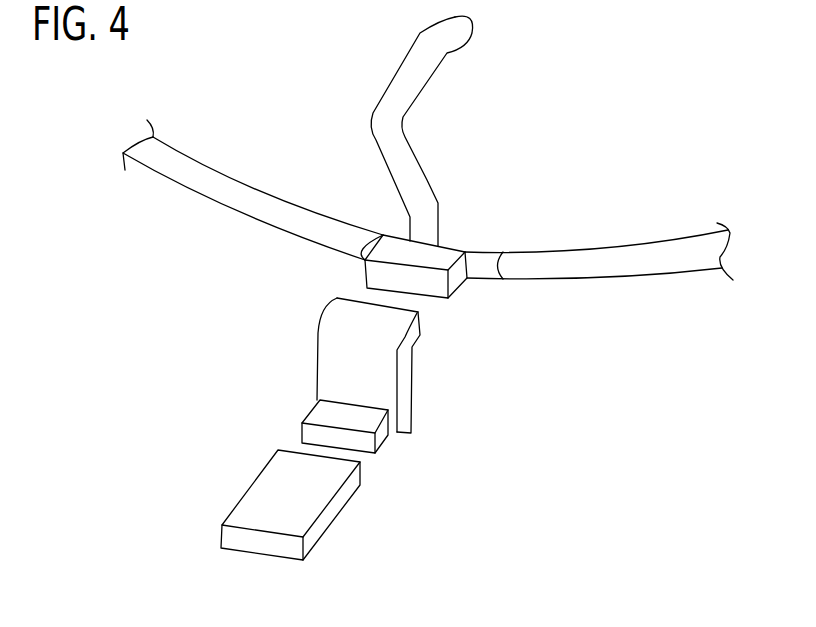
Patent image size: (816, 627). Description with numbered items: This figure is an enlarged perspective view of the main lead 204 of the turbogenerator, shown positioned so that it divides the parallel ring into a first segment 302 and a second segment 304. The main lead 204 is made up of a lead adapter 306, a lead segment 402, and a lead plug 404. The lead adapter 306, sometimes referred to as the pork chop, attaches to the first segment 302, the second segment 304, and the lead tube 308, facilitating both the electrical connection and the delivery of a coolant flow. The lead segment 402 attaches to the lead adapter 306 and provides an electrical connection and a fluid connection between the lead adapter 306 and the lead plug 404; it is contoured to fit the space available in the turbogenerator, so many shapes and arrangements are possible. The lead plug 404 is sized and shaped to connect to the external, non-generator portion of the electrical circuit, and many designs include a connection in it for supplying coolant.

The main lead 204 is at (550, 113).
The first segment 302 is at (240, 208).
The second segment 304 is at (610, 270).
The lead adapter 306 is at (440, 258).
The lead tube 308 is at (405, 80).
The lead segment 402 is at (338, 365).
The lead plug 404 is at (272, 497).